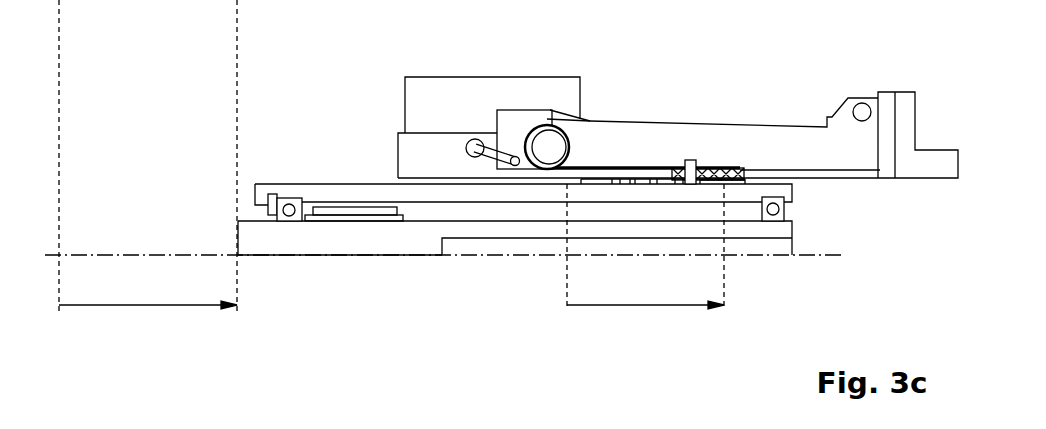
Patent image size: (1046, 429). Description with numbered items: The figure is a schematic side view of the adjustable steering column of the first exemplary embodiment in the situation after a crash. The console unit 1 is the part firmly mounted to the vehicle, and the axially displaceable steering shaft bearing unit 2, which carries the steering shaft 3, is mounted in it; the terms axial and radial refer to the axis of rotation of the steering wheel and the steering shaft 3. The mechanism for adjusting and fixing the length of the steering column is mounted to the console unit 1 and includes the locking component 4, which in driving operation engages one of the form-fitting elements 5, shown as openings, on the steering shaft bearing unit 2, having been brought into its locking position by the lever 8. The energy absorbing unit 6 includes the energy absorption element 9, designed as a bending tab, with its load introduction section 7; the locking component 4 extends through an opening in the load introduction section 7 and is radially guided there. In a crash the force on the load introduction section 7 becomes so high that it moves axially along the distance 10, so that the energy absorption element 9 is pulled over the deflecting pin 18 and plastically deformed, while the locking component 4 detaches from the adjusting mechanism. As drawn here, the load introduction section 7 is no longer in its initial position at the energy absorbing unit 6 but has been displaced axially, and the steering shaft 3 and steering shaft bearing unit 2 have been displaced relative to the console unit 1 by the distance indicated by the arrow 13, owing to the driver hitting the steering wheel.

The console unit 1 is at (413, 155).
The steering shaft bearing unit 2 is at (310, 193).
The steering shaft 3 is at (392, 247).
The locking component 4 is at (690, 184).
The form-fitting element 5 is at (618, 184).
The energy absorbing unit 6 is at (647, 148).
The load introduction section 7 is at (733, 182).
The lever 8 is at (470, 140).
The energy absorption element 9 is at (727, 168).
The distance 10 is at (655, 305).
The arrow 13 is at (148, 305).
The deflecting pin 18 is at (545, 142).